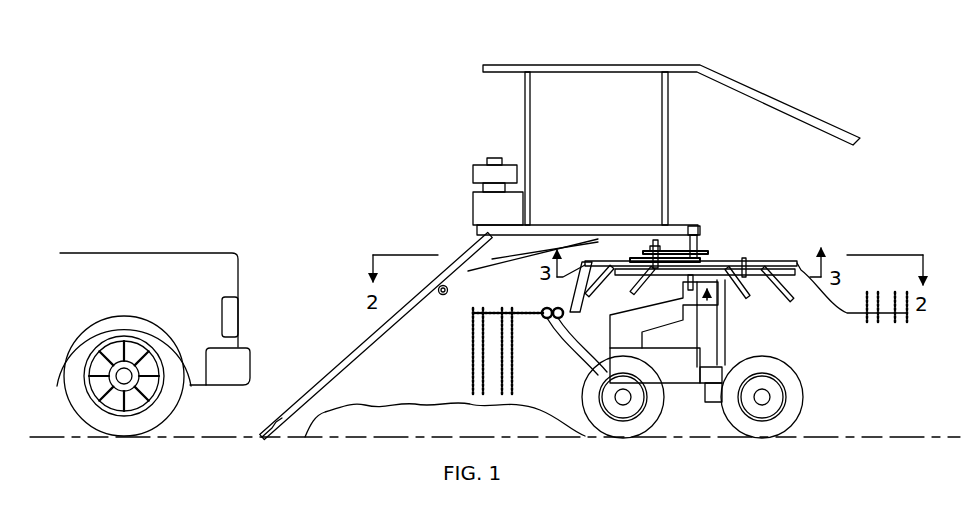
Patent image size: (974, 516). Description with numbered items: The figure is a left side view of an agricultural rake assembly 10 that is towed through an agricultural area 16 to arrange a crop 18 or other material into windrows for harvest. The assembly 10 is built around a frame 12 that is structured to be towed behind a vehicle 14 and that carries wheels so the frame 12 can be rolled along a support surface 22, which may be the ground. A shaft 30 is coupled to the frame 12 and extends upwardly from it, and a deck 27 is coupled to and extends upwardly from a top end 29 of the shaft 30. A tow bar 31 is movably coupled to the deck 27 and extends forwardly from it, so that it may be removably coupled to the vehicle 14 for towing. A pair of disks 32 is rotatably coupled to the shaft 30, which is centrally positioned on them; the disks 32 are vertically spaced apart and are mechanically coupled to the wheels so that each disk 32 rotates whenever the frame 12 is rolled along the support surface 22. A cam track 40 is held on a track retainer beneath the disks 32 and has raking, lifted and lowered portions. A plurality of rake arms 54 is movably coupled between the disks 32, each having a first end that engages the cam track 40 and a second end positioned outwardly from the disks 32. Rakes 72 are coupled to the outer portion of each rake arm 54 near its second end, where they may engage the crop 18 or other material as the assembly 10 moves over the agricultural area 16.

The agricultural rake assembly 10 is at (380, 100).
The frame 12 is at (672, 318).
The vehicle 14 is at (222, 253).
The agricultural area 16 is at (365, 398).
The crop 18 is at (320, 410).
The support surface 22 is at (858, 436).
The deck 27 is at (517, 128).
The top end 29 is at (690, 226).
The shaft 30 is at (700, 241).
The tow bar 31 is at (415, 307).
The pair of disks 32 is at (632, 258).
The cam track 40 is at (663, 251).
The rake arms 54 is at (575, 312).
The rakes 72 is at (470, 343).